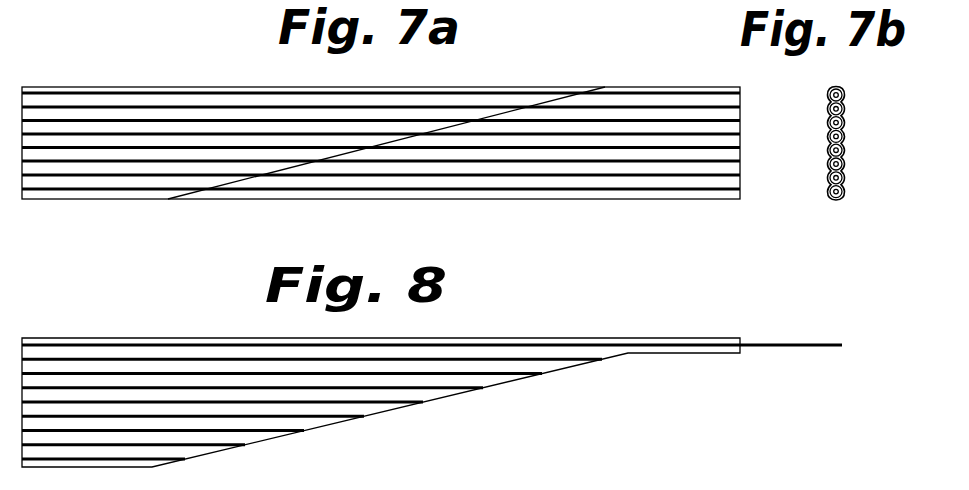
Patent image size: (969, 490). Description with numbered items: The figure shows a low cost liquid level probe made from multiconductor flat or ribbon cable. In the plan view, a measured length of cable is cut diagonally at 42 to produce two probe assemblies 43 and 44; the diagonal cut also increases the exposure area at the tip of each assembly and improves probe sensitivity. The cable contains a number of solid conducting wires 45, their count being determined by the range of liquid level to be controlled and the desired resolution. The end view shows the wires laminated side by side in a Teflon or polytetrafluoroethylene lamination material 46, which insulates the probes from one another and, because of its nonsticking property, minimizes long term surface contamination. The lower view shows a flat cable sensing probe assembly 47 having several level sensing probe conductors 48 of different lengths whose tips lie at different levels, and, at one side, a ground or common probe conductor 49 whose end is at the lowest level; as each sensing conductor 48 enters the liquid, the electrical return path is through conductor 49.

In FIG. 7A, the diagonal cut 42 is at (534, 108).
In FIG. 7A, the probe assembly 43 is at (105, 58).
In FIG. 7A, the probe assembly 44 is at (640, 212).
In FIG. 7A, the conducting wires 45 is at (238, 90).
In FIG. 7B, the conducting wires 45 is at (843, 97).
In FIG. 7B, the lamination material 46 is at (845, 143).
In FIG. 8, the flat cable sensing probe assembly 47 is at (103, 314).
In FIG. 8, the level sensing probe conductors 48 is at (185, 457).
In FIG. 8, the ground or common probe conductor 49 is at (672, 354).